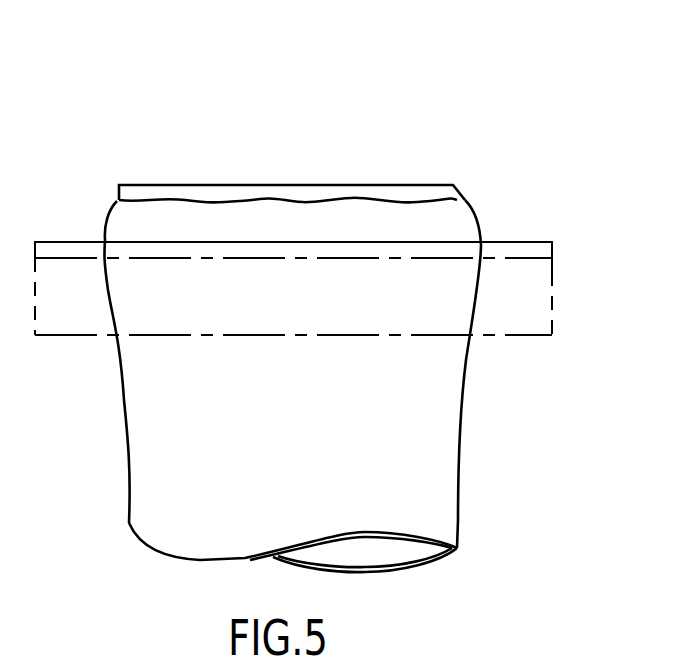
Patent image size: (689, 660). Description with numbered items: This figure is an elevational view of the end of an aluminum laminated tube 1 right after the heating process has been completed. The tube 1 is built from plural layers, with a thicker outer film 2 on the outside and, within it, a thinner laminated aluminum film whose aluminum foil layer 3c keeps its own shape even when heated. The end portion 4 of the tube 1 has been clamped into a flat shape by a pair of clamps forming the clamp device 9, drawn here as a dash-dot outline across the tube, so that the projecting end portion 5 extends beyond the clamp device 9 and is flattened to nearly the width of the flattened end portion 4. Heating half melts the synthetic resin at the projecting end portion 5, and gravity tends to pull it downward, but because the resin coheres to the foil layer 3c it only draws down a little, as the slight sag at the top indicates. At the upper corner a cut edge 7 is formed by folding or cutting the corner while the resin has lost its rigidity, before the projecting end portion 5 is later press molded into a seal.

The aluminum laminated tube 1 is at (480, 432).
The outer film 2 is at (149, 219).
The aluminum foil layer 3c is at (266, 185).
The end portion 4 is at (167, 320).
The projecting end portion 5 is at (340, 198).
The cut edge 7 is at (460, 193).
The clamp device 9 is at (552, 288).